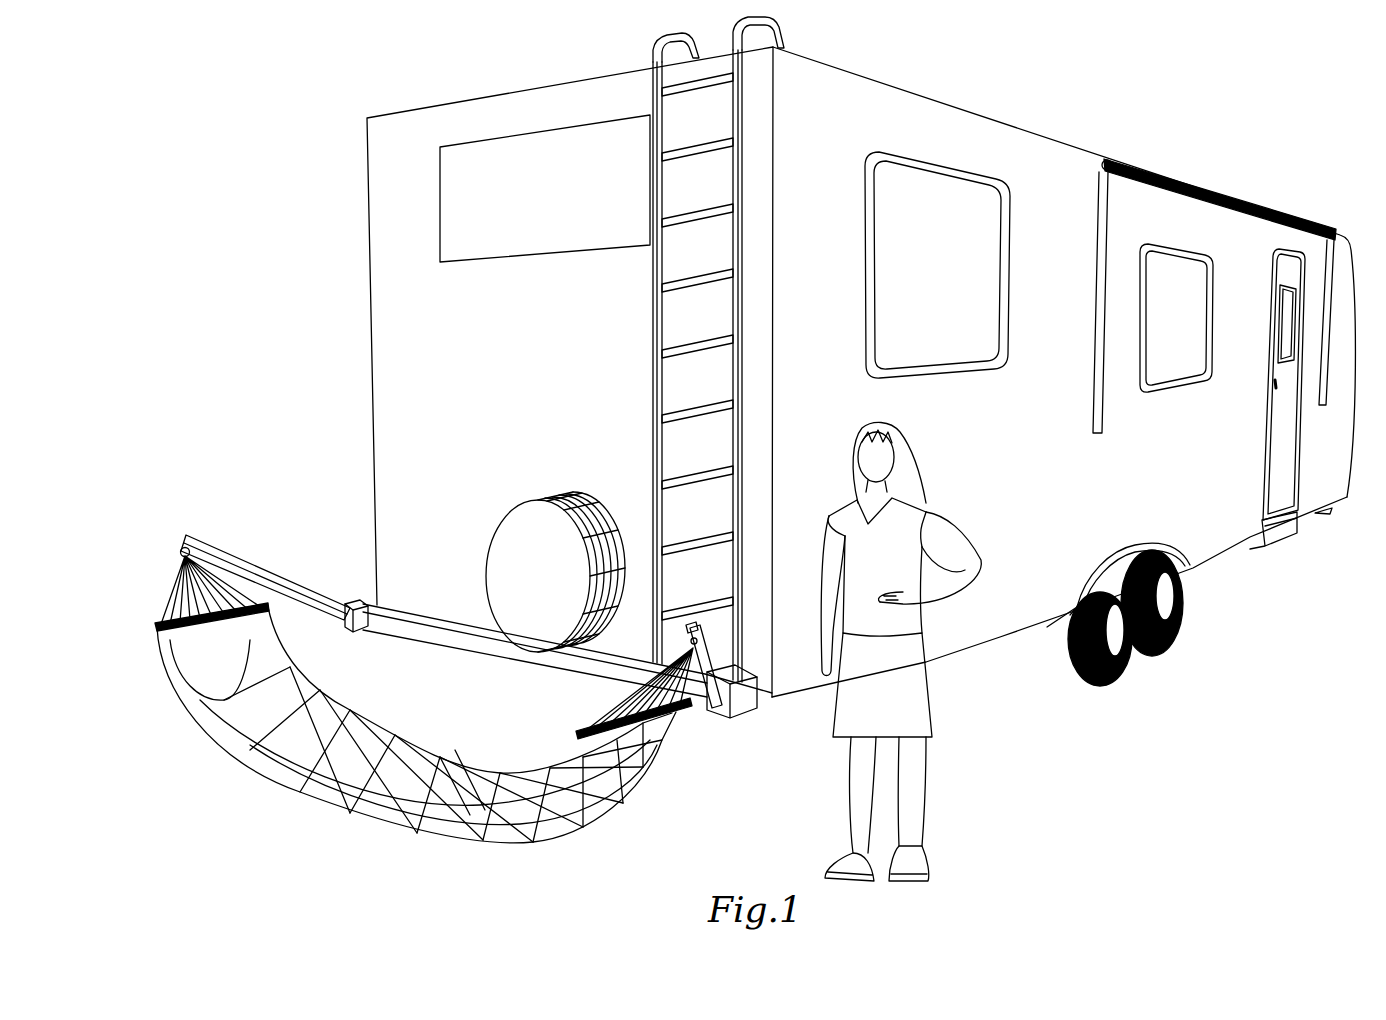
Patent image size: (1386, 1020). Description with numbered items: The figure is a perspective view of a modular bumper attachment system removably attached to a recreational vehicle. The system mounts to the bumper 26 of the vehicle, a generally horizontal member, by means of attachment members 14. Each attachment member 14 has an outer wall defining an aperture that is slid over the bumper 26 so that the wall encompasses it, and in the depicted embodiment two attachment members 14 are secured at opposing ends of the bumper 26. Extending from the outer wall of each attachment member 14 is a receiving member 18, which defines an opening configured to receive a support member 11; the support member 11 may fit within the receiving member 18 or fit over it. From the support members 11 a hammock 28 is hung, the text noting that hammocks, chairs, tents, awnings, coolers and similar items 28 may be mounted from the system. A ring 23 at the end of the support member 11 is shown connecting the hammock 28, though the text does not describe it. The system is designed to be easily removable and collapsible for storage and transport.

The support member 11 is at (248, 570).
The attachment member 14 is at (368, 590).
The receiving member 18 is at (344, 626).
The hook ring 23 is at (181, 550).
The bumper 26 is at (766, 708).
The hammock 28 is at (1086, 120).